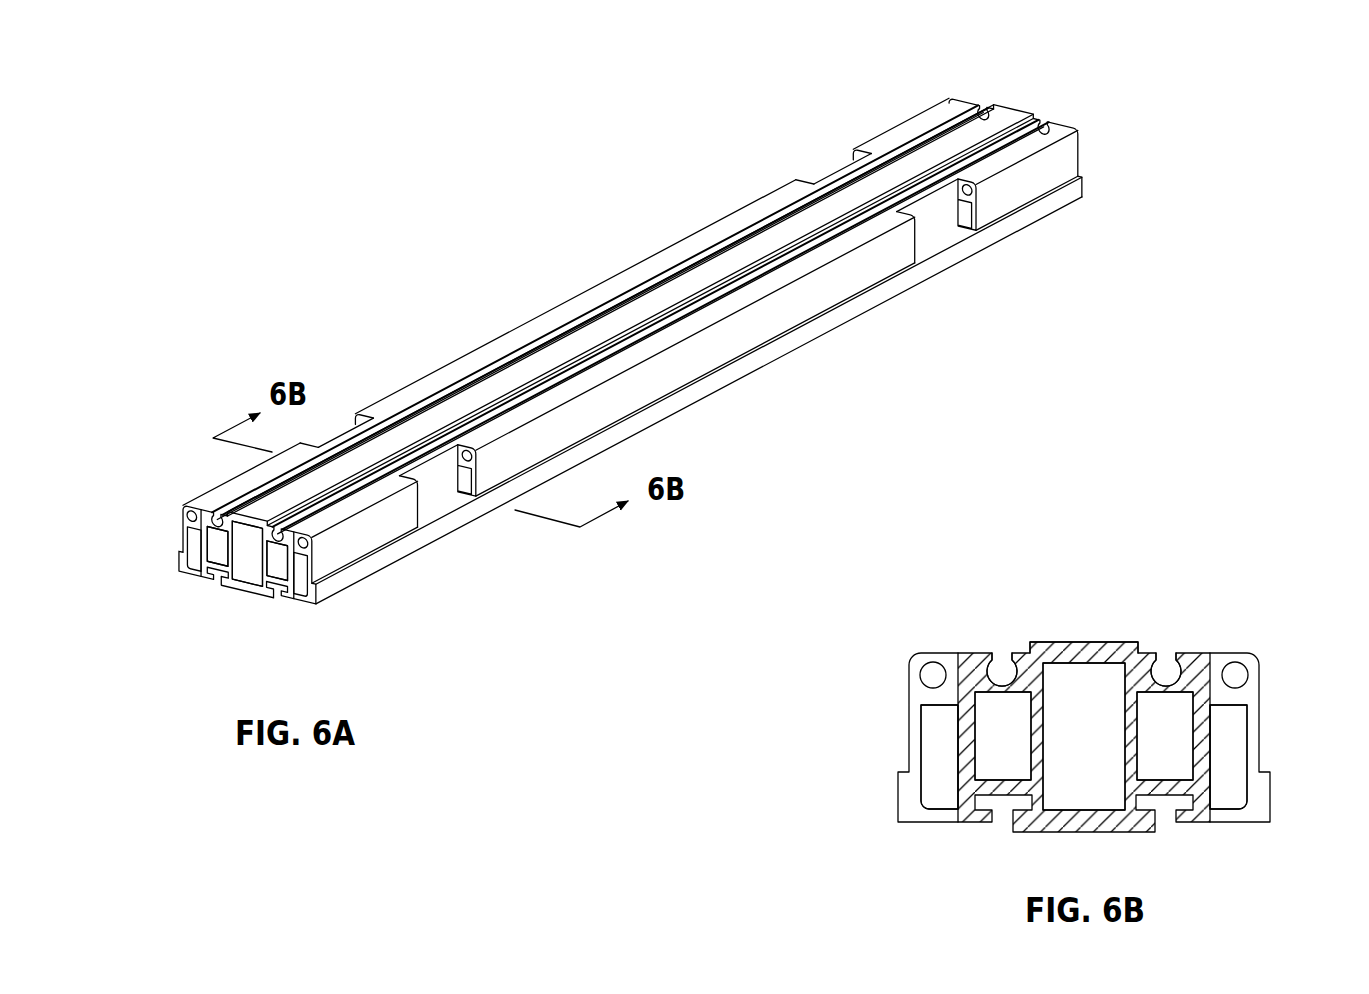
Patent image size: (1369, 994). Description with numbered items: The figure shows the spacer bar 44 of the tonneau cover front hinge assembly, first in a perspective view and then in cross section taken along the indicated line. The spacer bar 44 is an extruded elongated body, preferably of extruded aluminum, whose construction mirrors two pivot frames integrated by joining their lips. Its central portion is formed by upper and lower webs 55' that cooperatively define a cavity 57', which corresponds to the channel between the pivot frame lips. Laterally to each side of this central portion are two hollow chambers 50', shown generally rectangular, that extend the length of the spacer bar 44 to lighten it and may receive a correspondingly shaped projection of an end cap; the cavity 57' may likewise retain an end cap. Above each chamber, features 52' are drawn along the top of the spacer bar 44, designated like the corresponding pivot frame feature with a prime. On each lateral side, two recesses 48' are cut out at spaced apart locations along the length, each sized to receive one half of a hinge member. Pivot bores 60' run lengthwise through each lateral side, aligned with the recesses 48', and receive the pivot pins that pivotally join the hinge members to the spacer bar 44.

In FIG. 6A, the spacer bar 44 is at (670, 186).
In FIG. 6B, the spacer bar 44 is at (1018, 583).
In FIG. 6A, the recesses 48' is at (638, 346).
In FIG. 6B, the recesses 48' is at (1083, 773).
In FIG. 6A, the hollow chambers 50' is at (592, 454).
In FIG. 6B, the hollow chambers 50' is at (1089, 795).
In FIG. 6A, the groove 52' is at (622, 319).
In FIG. 6B, the groove 52' is at (1087, 630).
In FIG. 6B, the upper and lower webs 55' is at (1085, 605).
In FIG. 6A, the cavity 57' is at (244, 596).
In FIG. 6B, the cavity 57' is at (1084, 736).
In FIG. 6A, the pivot bores 60' is at (547, 340).
In FIG. 6B, the pivot bores 60' is at (1088, 654).